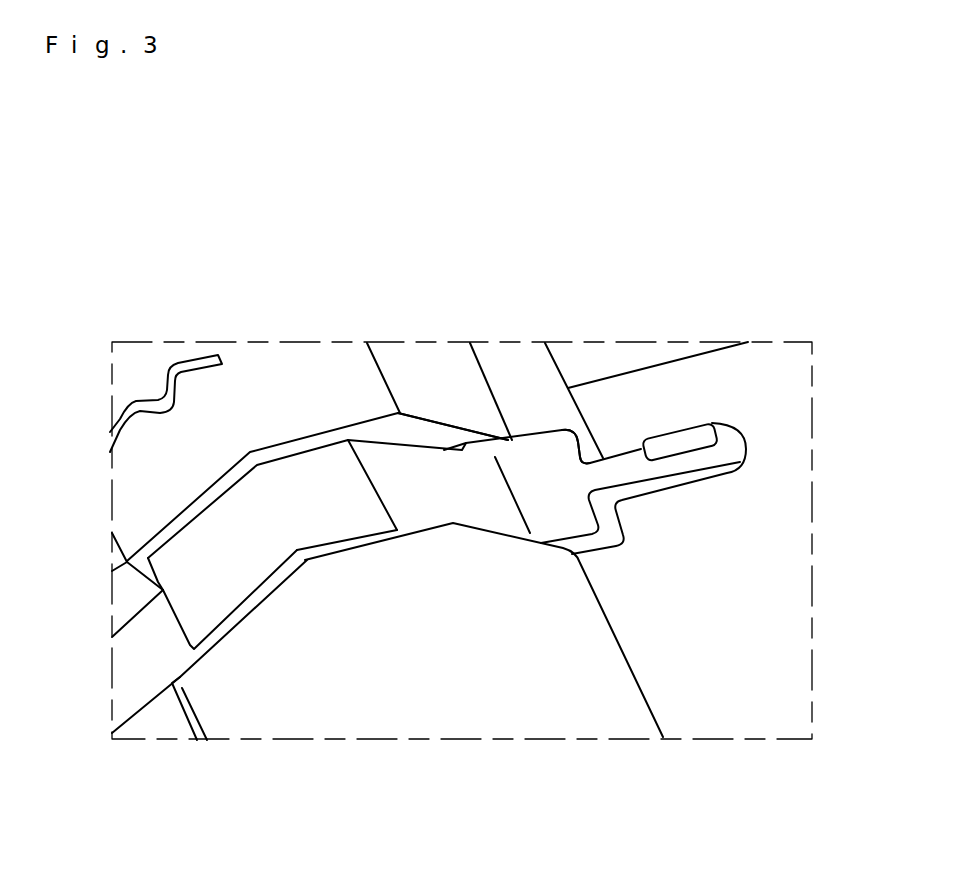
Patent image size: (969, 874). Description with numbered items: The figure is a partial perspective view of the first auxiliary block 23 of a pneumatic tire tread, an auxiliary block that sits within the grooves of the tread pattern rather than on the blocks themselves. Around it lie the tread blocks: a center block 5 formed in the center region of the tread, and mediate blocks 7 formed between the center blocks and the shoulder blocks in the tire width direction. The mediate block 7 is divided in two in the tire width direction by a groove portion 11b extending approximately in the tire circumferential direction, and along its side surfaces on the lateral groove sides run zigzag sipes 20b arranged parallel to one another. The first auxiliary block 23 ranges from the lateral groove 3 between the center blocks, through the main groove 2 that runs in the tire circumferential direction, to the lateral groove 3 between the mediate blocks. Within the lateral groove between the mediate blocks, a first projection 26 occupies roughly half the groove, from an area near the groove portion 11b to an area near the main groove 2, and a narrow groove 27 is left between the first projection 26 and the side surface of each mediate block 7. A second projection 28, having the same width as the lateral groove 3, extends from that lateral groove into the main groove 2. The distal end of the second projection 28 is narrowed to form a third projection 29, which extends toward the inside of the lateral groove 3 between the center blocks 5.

The main groove 2 is at (536, 355).
The lateral groove 3 is at (420, 433).
The center block 5 is at (592, 355).
The mediate block 7 is at (352, 353).
The groove portion 11b is at (190, 725).
The sipe 20b is at (177, 365).
The first auxiliary block 23 is at (320, 470).
The first projection 26 is at (400, 505).
The narrow groove 27 is at (445, 443).
The second projection 28 is at (545, 447).
The third projection 29 is at (668, 443).